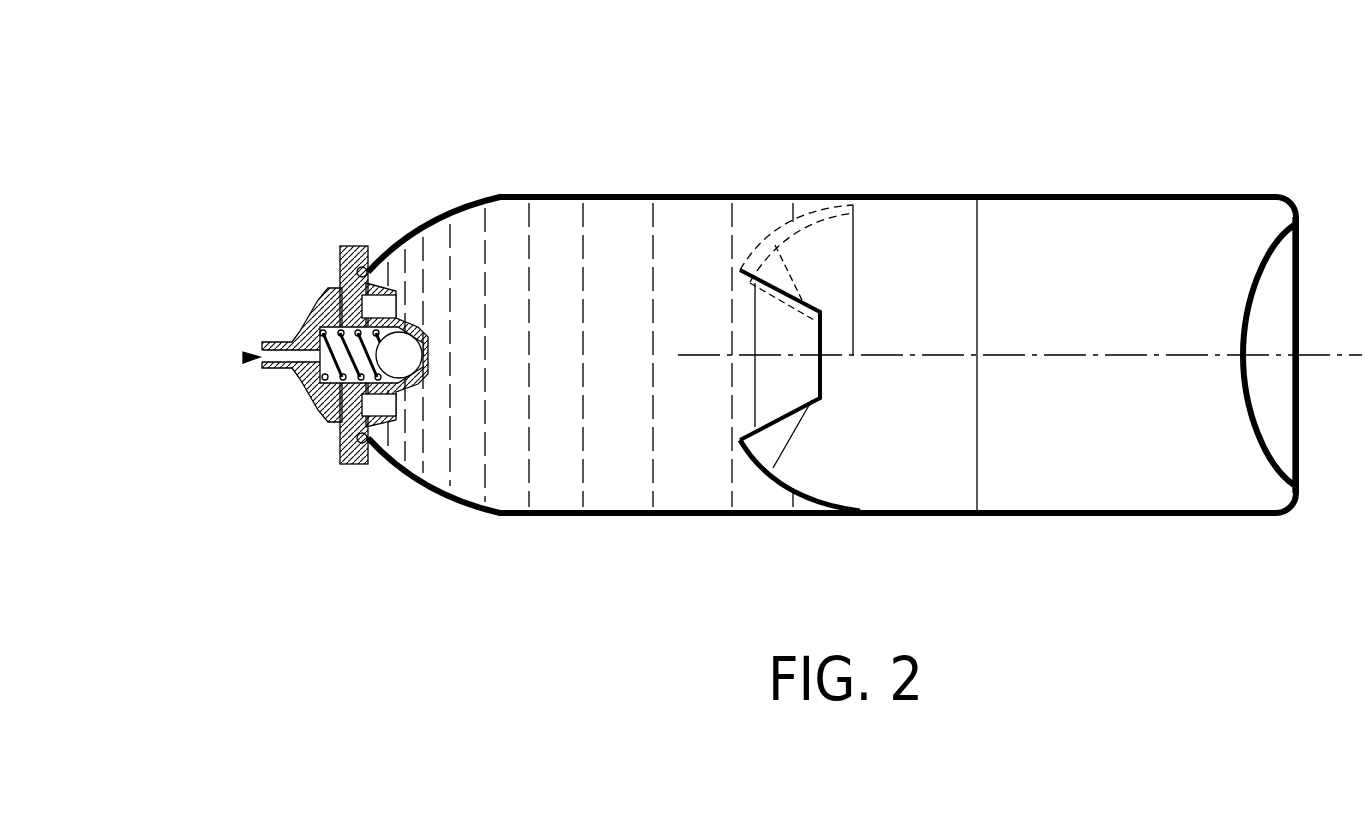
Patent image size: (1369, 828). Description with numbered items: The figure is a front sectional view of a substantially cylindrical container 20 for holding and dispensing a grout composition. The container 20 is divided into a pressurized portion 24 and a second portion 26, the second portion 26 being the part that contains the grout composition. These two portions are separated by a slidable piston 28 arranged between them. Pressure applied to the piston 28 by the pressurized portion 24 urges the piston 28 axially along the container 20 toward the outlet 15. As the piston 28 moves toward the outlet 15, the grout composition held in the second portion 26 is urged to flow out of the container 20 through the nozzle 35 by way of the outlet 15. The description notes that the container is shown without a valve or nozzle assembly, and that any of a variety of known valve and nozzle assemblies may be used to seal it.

The outlet 15 is at (246, 358).
The container 20 is at (565, 197).
The pressurized portion 24 is at (1121, 301).
The second portion 26 is at (596, 449).
The slidable piston 28 is at (768, 243).
The nozzle 35 is at (308, 332).